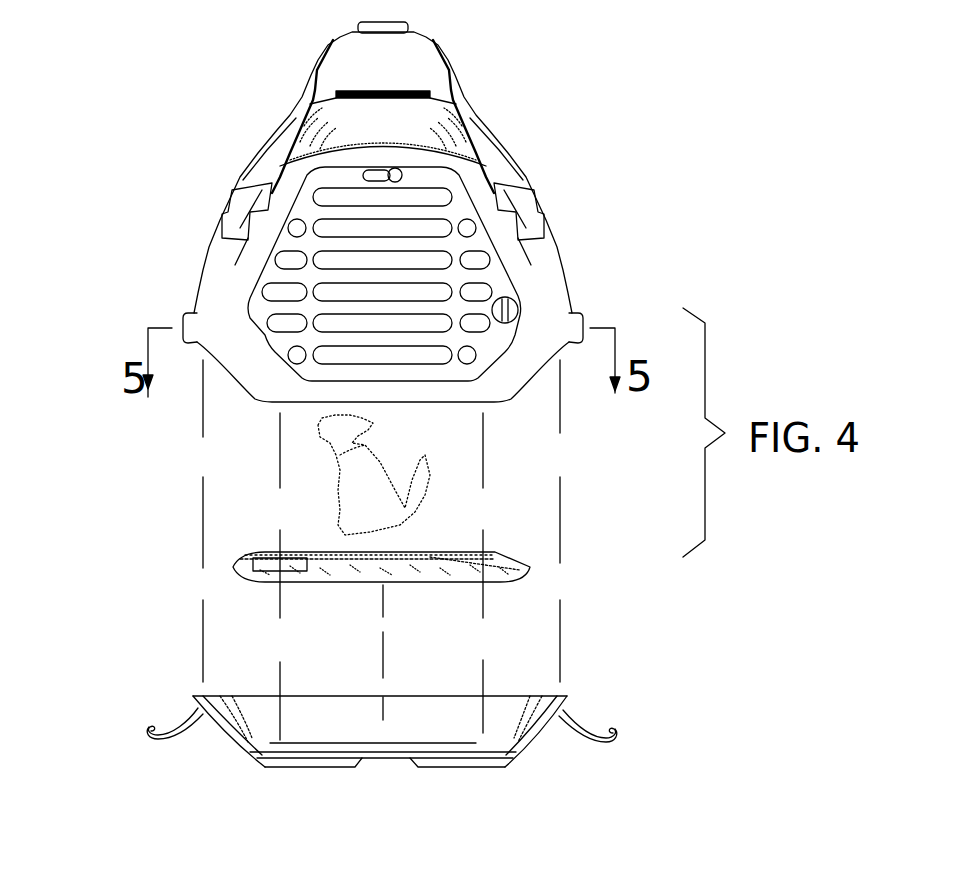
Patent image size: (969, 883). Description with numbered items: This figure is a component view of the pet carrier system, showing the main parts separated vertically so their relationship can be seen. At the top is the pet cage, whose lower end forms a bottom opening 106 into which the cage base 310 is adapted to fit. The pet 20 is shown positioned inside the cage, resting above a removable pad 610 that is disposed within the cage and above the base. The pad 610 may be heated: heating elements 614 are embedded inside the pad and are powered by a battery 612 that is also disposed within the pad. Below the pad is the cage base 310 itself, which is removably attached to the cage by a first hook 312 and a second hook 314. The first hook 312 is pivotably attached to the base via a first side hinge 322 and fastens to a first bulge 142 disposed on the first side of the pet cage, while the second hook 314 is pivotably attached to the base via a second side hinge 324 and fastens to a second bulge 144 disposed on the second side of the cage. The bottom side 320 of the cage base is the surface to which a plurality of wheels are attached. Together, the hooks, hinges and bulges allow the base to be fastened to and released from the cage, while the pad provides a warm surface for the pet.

The pet 20 is at (350, 492).
The bottom opening 106 is at (317, 402).
The first bulge 142 is at (187, 317).
The second bulge 144 is at (577, 317).
The cage base 310 is at (497, 735).
The first hook 312 is at (160, 742).
The second hook 314 is at (613, 737).
The bottom side 320 is at (395, 758).
The first side hinge 322 is at (202, 727).
The second side hinge 324 is at (560, 710).
The removable pad 610 is at (248, 566).
The battery 612 is at (278, 571).
The heating elements 614 is at (425, 556).